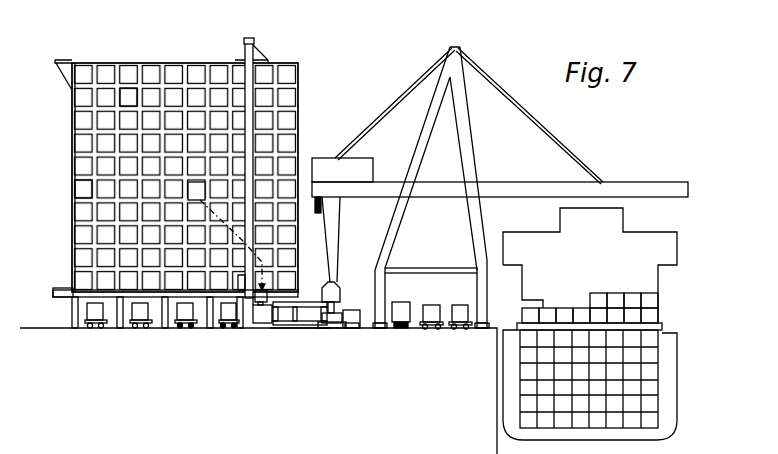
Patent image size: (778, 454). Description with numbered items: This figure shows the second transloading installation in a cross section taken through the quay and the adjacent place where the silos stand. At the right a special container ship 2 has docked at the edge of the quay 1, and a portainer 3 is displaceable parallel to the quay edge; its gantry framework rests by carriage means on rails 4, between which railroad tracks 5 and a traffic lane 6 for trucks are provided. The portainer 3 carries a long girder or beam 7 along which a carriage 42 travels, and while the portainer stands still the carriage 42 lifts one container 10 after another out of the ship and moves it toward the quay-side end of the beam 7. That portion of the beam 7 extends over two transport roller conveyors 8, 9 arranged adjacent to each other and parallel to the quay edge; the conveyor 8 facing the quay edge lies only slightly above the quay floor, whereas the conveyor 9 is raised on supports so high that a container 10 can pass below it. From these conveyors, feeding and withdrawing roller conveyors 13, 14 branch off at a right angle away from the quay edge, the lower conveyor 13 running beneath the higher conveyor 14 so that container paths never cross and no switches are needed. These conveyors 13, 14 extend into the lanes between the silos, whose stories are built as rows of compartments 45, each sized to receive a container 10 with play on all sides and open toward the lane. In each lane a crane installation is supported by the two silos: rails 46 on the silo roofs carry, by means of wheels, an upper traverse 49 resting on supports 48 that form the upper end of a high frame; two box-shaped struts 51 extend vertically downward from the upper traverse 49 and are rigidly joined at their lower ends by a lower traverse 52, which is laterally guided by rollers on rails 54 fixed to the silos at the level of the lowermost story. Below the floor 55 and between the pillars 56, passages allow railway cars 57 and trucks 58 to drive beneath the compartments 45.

The quay 1 is at (487, 345).
The container ship 2 is at (677, 337).
The portainer 3 is at (395, 88).
The rails 4 is at (377, 329).
The railroad tracks 5 is at (446, 326).
The traffic lane 6 is at (400, 325).
The girder or beam 7 is at (527, 188).
The transport roller conveyor 8 is at (352, 328).
The transport roller conveyor 9 is at (327, 313).
The container 10 is at (341, 296).
The feeding and withdrawing roller conveyor 13 is at (286, 328).
The feeding and withdrawing roller conveyor 14 is at (305, 302).
The carriage 42 is at (341, 200).
The compartments 45 is at (132, 100).
The rails 46 is at (106, 62).
The supports 48 is at (268, 60).
The upper traverse 49 is at (253, 42).
The box-shaped struts 51 is at (247, 123).
The lower traverse 52 is at (247, 329).
The rails 54 is at (57, 297).
The floor 55 is at (62, 291).
The pillars 56 is at (75, 326).
The railway cars 57 is at (133, 330).
The trucks 58 is at (227, 330).